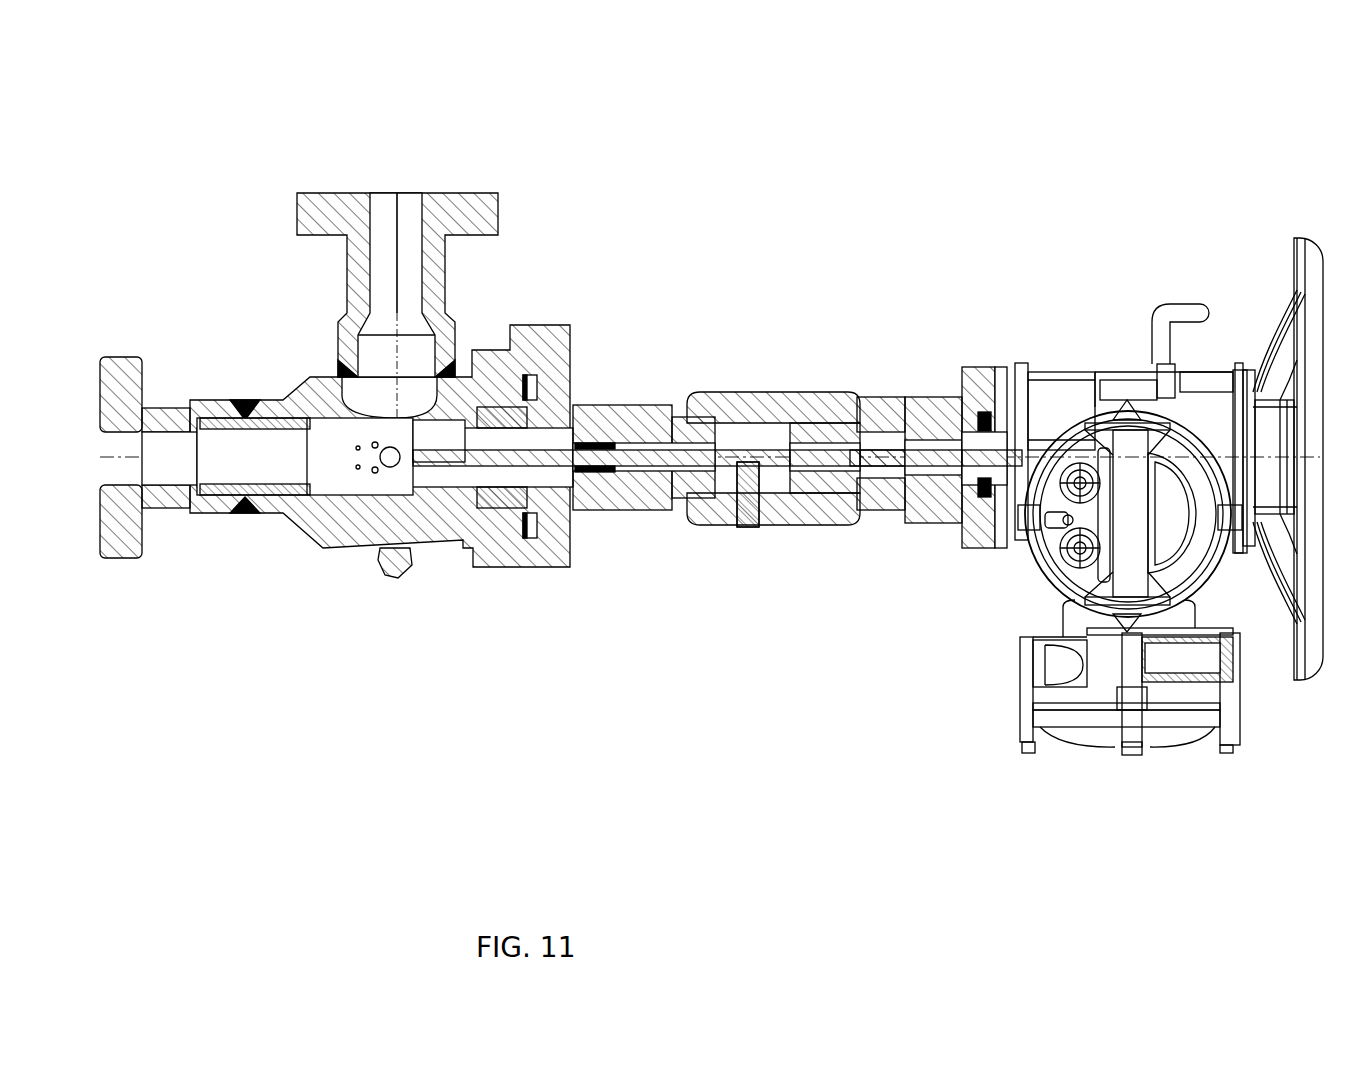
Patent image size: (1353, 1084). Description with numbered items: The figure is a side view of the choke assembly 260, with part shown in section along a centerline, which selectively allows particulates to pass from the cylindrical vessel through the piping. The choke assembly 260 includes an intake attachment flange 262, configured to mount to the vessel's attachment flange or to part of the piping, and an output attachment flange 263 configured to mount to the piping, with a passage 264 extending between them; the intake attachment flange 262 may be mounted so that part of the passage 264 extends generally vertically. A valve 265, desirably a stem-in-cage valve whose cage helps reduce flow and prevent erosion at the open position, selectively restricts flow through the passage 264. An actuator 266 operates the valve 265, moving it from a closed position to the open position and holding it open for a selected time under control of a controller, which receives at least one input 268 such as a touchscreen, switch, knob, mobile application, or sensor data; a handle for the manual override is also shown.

The choke assembly 260 is at (268, 88).
The intake attachment flange 262 is at (492, 200).
The output attachment flange 263 is at (116, 558).
The passage 264 is at (378, 224).
The valve 265 is at (335, 475).
The actuator 266 is at (1128, 588).
The input 268 is at (1313, 297).